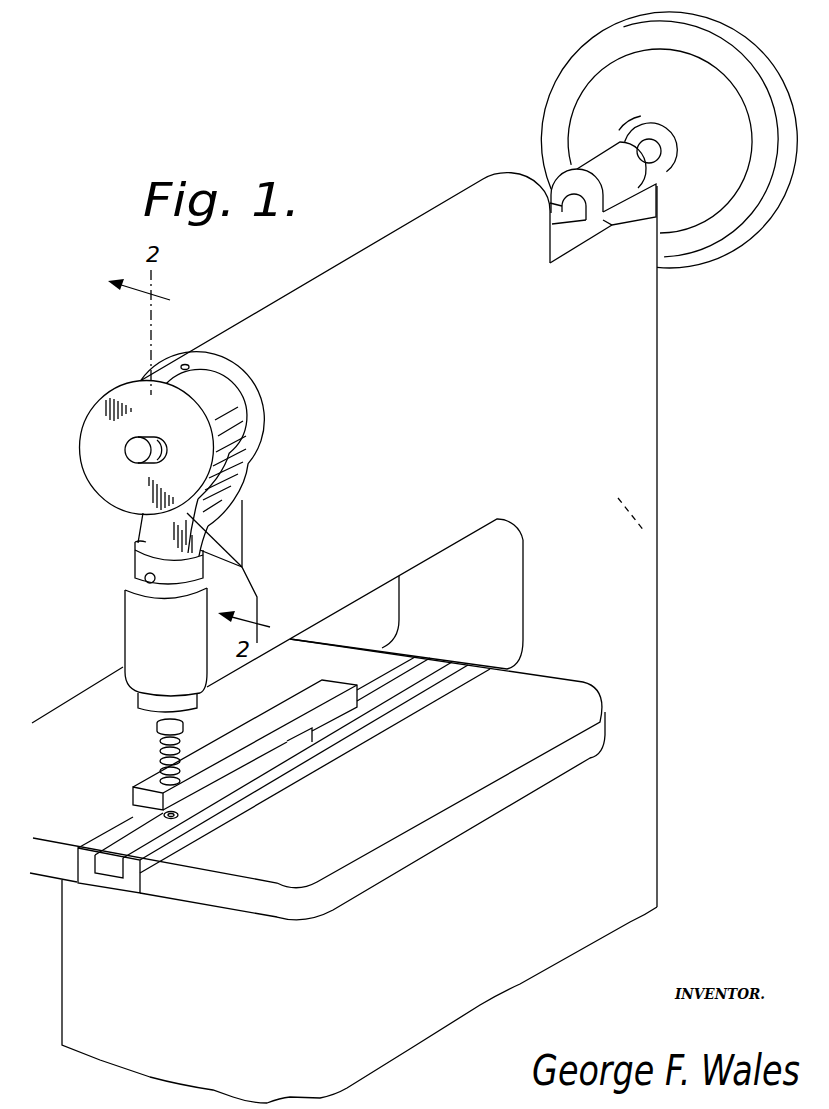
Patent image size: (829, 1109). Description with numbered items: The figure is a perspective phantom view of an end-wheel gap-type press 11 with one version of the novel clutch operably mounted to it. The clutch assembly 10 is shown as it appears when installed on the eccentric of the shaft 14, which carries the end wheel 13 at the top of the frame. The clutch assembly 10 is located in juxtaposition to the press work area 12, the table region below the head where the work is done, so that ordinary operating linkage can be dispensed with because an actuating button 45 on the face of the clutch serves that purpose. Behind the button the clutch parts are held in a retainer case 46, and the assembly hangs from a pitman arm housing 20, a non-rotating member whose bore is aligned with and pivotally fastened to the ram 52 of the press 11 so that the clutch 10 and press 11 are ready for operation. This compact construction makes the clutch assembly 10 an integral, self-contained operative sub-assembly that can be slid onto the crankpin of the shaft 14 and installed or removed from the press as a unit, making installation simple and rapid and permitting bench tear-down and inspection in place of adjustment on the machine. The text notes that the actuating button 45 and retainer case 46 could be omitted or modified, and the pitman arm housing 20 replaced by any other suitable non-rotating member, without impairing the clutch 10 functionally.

The clutch assembly 10 is at (88, 393).
The end-wheel gap-type press 11 is at (672, 476).
The press work area 12 is at (243, 807).
The drive pulley 13 is at (710, 250).
The shaft 14 is at (548, 208).
The pitman arm housing 20 is at (205, 522).
The actuating button 45 is at (126, 452).
The retainer case 46 is at (223, 397).
The ram 52 is at (133, 562).